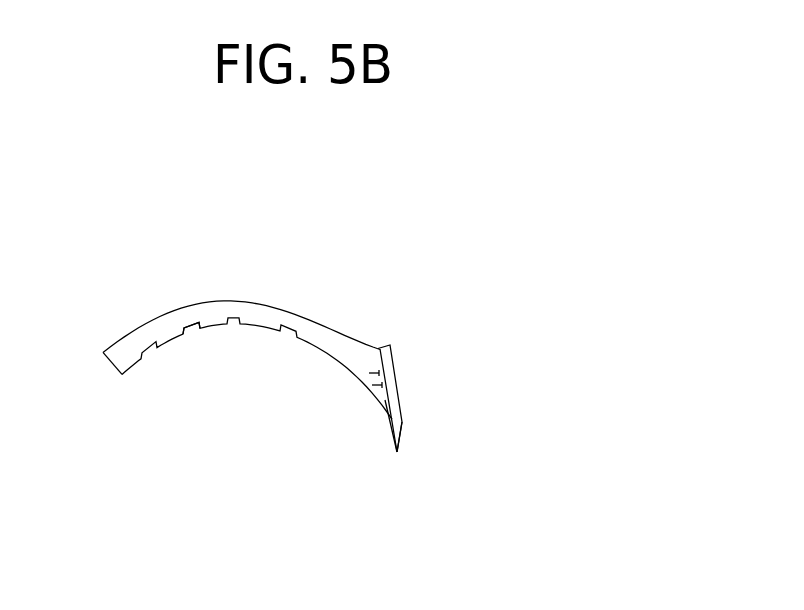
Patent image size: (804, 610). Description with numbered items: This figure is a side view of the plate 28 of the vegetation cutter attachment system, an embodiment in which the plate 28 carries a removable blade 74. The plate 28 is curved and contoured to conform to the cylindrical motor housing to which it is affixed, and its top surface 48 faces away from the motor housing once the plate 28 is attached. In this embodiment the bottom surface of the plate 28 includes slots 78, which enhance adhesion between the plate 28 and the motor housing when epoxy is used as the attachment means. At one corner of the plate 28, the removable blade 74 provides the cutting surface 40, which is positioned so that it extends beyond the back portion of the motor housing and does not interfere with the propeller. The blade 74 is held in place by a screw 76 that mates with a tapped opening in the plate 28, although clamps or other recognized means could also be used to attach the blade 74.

The plate 28 is at (357, 246).
The top surface 48 is at (317, 352).
The slots 78 is at (196, 333).
The screw 76 is at (393, 378).
The removable blade 74 is at (393, 418).
The cutting surface 40 is at (400, 430).